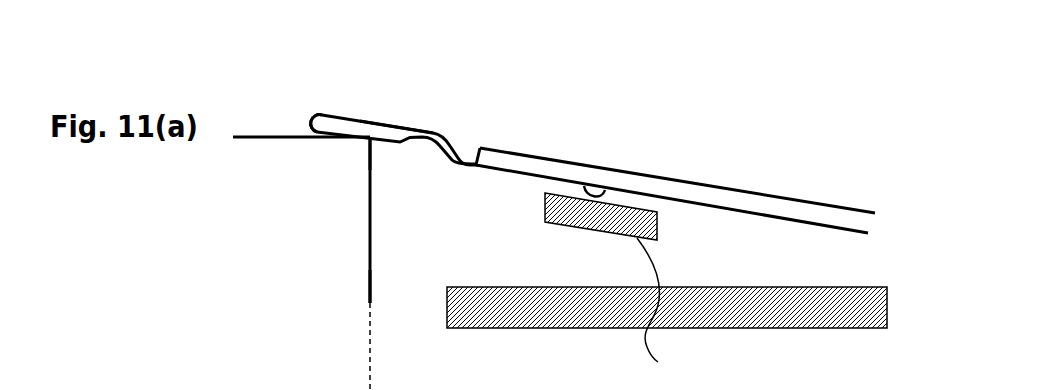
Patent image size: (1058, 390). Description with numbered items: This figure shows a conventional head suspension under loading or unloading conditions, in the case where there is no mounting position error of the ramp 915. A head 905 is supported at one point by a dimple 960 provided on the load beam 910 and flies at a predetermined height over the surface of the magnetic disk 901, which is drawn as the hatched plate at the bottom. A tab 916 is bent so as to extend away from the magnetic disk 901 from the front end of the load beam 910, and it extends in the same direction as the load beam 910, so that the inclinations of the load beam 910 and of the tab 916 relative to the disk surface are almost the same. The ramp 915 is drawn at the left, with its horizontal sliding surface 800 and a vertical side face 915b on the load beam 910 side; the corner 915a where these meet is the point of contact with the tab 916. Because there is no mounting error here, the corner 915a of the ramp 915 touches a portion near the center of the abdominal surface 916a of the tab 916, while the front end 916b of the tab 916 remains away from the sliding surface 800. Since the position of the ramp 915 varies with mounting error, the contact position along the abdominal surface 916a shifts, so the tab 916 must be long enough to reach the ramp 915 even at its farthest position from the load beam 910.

The sliding surface 800 is at (250, 137).
The ramp 915 is at (260, 208).
The corner 915a is at (366, 143).
The side face 915b is at (372, 297).
The tab 916 is at (352, 119).
The abdominal surface 916a is at (388, 126).
The front end 916b is at (314, 116).
The load beam 910 is at (724, 166).
The dimple 960 is at (593, 186).
The head 905 is at (655, 314).
The magnetic disk 901 is at (768, 326).